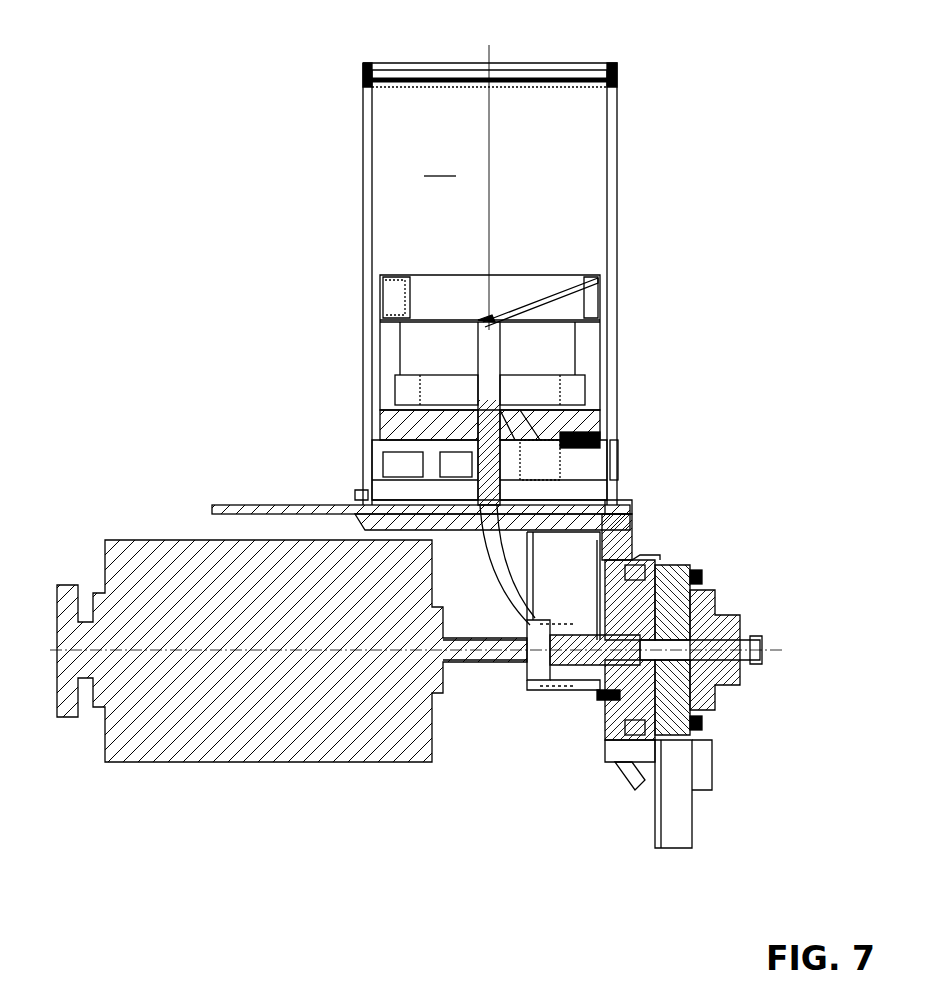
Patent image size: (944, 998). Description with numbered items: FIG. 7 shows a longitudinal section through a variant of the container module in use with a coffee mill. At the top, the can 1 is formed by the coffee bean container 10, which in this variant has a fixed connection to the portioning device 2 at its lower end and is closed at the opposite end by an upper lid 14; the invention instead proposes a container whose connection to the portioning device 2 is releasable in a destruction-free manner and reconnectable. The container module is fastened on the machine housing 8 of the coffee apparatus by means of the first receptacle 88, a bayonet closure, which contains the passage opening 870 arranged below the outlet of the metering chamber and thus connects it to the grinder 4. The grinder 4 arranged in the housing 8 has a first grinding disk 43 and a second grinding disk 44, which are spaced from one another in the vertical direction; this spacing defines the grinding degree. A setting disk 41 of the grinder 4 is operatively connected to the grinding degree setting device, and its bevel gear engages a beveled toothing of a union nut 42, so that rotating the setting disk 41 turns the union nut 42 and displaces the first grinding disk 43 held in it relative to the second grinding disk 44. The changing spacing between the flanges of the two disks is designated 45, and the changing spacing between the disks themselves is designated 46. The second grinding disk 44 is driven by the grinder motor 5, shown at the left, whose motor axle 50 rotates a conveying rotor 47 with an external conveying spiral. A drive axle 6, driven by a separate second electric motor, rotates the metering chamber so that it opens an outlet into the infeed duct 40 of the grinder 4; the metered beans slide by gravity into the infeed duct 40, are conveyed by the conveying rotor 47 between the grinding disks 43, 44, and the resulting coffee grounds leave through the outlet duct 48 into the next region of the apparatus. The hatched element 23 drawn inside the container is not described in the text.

The can 1 is at (298, 197).
The portioning device 2 is at (298, 322).
The grinder 4 is at (764, 503).
The grinder motor 5 is at (151, 491).
The drive axle 6 is at (494, 610).
The machine housing 8 is at (303, 506).
The coffee bean container 10 is at (618, 118).
The upper lid 14 is at (576, 70).
The inclined plate 23 is at (585, 275).
The infeed duct 40 is at (560, 605).
The setting disk 41 is at (612, 500).
The union nut 42 is at (628, 515).
The first grinding disk 43 is at (642, 760).
The second grinding disk 44 is at (705, 700).
The spacing between flanges of the grinding disks 45 is at (645, 560).
The spacing between the grinding disks 46 is at (700, 580).
The conveying rotor 47 is at (592, 690).
The outlet duct 48 is at (685, 822).
The motor axle 50 is at (470, 655).
The first receptacle 88 is at (360, 480).
The passage opening 870 is at (612, 462).